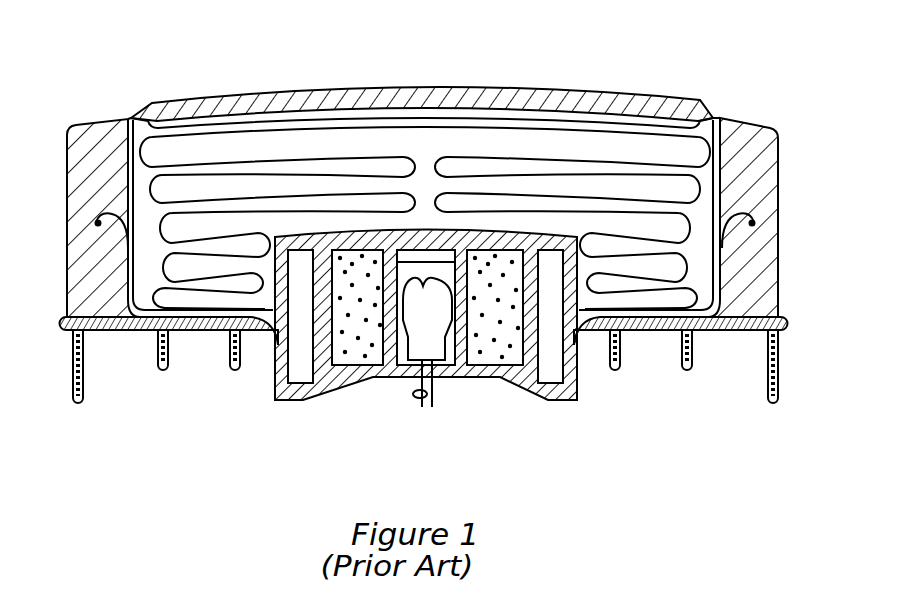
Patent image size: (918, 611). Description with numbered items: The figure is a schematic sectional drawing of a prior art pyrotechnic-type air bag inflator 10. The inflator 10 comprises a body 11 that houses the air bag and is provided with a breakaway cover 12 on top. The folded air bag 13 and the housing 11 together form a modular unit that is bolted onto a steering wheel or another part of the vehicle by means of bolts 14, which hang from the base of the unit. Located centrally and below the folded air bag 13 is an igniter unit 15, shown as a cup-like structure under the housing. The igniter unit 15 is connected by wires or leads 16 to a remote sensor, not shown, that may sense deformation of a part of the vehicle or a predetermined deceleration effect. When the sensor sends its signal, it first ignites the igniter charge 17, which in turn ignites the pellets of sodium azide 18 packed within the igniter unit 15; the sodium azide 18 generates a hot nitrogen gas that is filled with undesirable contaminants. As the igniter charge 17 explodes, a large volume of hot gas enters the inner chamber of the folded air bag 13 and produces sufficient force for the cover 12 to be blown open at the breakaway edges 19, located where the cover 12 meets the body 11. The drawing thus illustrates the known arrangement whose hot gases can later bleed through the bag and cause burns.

The pyrotechnic-type air bag inflator 10 is at (203, 70).
The body 11 is at (770, 130).
The breakaway cover 12 is at (614, 103).
The folded air bag 13 is at (395, 144).
The bolts 14 is at (83, 384).
The igniter unit 15 is at (348, 406).
The wires or leads 16 is at (427, 393).
The igniter charge 17 is at (403, 273).
The pellets of sodium azide 18 is at (500, 353).
The breakaway edges 19 is at (129, 118).